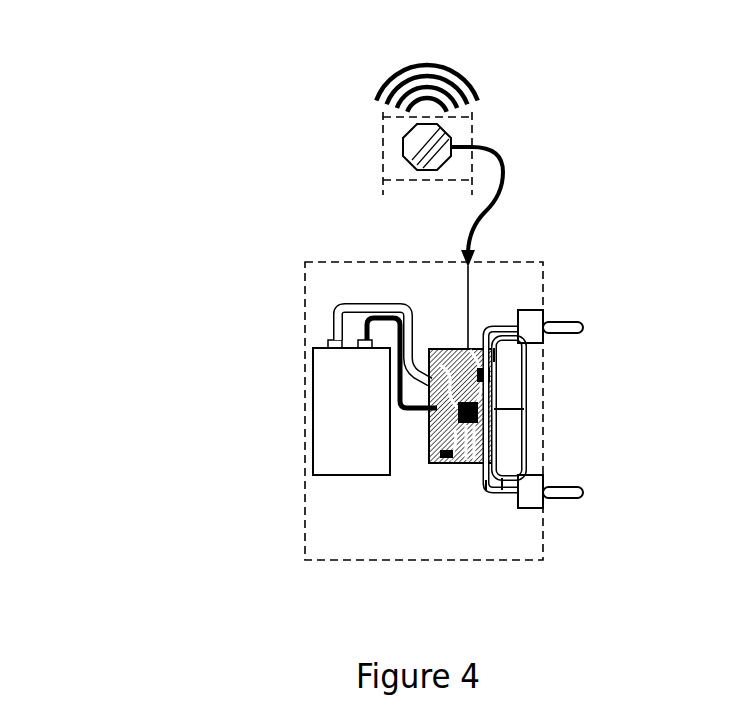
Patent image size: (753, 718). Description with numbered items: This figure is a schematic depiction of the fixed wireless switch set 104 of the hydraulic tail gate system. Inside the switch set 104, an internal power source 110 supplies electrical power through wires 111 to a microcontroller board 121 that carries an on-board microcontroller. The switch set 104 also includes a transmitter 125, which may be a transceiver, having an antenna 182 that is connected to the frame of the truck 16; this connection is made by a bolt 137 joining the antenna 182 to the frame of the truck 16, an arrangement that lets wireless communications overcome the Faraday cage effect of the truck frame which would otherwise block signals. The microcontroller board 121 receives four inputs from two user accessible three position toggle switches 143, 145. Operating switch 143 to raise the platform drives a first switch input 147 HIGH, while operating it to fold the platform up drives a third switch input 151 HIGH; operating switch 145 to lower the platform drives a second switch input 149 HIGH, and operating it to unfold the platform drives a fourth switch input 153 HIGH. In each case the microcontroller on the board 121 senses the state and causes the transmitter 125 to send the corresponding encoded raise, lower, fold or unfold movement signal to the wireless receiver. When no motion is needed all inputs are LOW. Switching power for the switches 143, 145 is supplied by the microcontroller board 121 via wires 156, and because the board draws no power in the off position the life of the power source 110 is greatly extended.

The fixed wireless switch set 104 is at (168, 103).
The truck 16 is at (303, 300).
The bolt 137 is at (406, 150).
The antenna 182 is at (507, 166).
The internal power source 110 is at (352, 420).
The wires 111 is at (368, 322).
The microcontroller board 121 is at (460, 460).
The transmitter 125 is at (488, 375).
The first switch input 147 is at (496, 322).
The wires 156 is at (525, 450).
The third switch input 151 is at (522, 343).
The three position toggle switch 143 is at (533, 325).
The three position toggle switch 145 is at (530, 492).
The second switch input 149 is at (502, 482).
The fourth switch input 153 is at (488, 488).